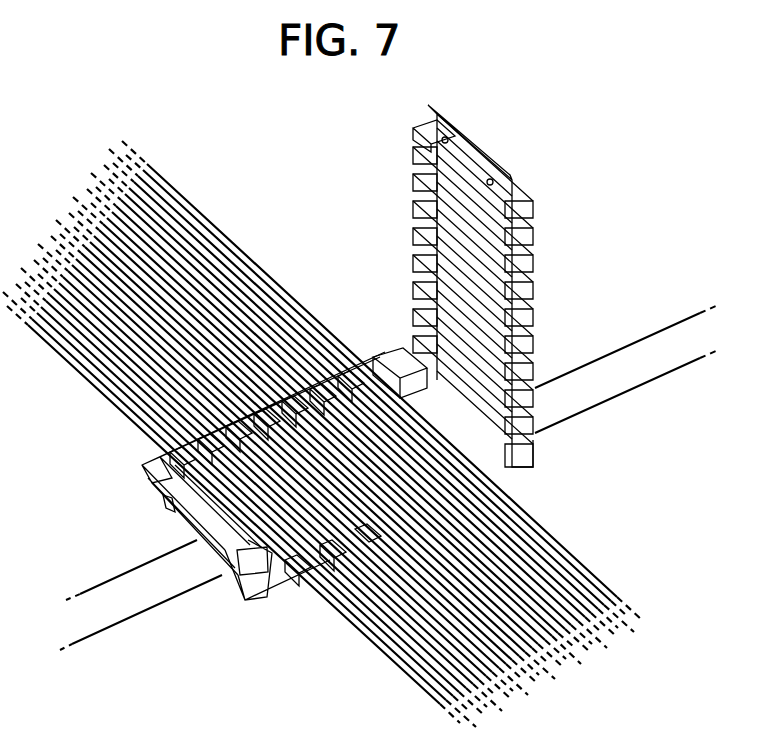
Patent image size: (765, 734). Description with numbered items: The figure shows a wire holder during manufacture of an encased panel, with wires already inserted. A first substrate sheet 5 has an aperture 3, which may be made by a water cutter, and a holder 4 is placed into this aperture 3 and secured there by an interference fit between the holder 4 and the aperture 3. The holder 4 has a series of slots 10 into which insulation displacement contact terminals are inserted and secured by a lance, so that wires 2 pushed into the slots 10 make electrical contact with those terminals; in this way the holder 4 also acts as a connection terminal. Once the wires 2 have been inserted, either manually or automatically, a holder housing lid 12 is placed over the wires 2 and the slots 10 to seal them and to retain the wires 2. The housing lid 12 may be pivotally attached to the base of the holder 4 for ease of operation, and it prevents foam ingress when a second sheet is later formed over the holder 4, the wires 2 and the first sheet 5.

The wires 2 is at (84, 375).
The aperture 3 is at (224, 575).
The holder 4 is at (166, 511).
The first substrate sheet 5 is at (126, 600).
The slots 10 is at (158, 443).
The holder housing lid 12 is at (413, 322).